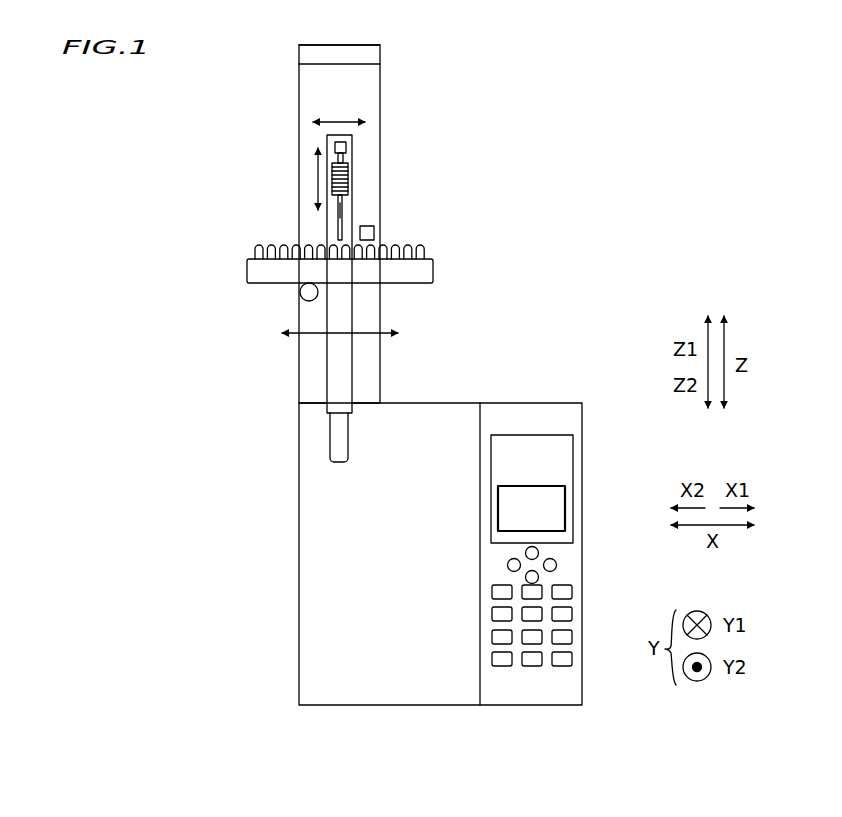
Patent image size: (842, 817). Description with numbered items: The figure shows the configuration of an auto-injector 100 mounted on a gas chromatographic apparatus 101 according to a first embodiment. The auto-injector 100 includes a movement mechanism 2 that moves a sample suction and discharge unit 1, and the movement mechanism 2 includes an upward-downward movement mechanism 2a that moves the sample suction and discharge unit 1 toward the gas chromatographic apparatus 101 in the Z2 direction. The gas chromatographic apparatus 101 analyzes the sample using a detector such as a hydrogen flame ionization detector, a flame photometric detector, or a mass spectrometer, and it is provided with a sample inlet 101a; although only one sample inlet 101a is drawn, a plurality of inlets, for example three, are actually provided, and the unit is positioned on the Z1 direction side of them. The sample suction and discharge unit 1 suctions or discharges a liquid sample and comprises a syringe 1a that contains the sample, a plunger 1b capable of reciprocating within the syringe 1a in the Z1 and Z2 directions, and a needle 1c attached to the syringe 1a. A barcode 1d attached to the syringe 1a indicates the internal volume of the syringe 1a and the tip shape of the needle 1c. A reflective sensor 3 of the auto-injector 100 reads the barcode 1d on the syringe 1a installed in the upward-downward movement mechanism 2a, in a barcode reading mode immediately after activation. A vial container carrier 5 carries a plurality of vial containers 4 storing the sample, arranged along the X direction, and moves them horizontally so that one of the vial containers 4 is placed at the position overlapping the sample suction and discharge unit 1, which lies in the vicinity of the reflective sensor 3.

The auto-injector 100 is at (280, 90).
The movement mechanism 2 is at (416, 94).
The upward-downward movement mechanism 2a is at (353, 137).
The sample suction and discharge unit 1 is at (408, 190).
The syringe 1a is at (348, 176).
The plunger 1b is at (346, 148).
The needle 1c is at (394, 211).
The barcode 1d is at (357, 188).
The reflective sensor 3 is at (374, 230).
The vial containers 4 is at (292, 247).
The vial container carrier 5 is at (247, 269).
The gas chromatographic apparatus 101 is at (524, 378).
The sample inlet 101a is at (341, 465).